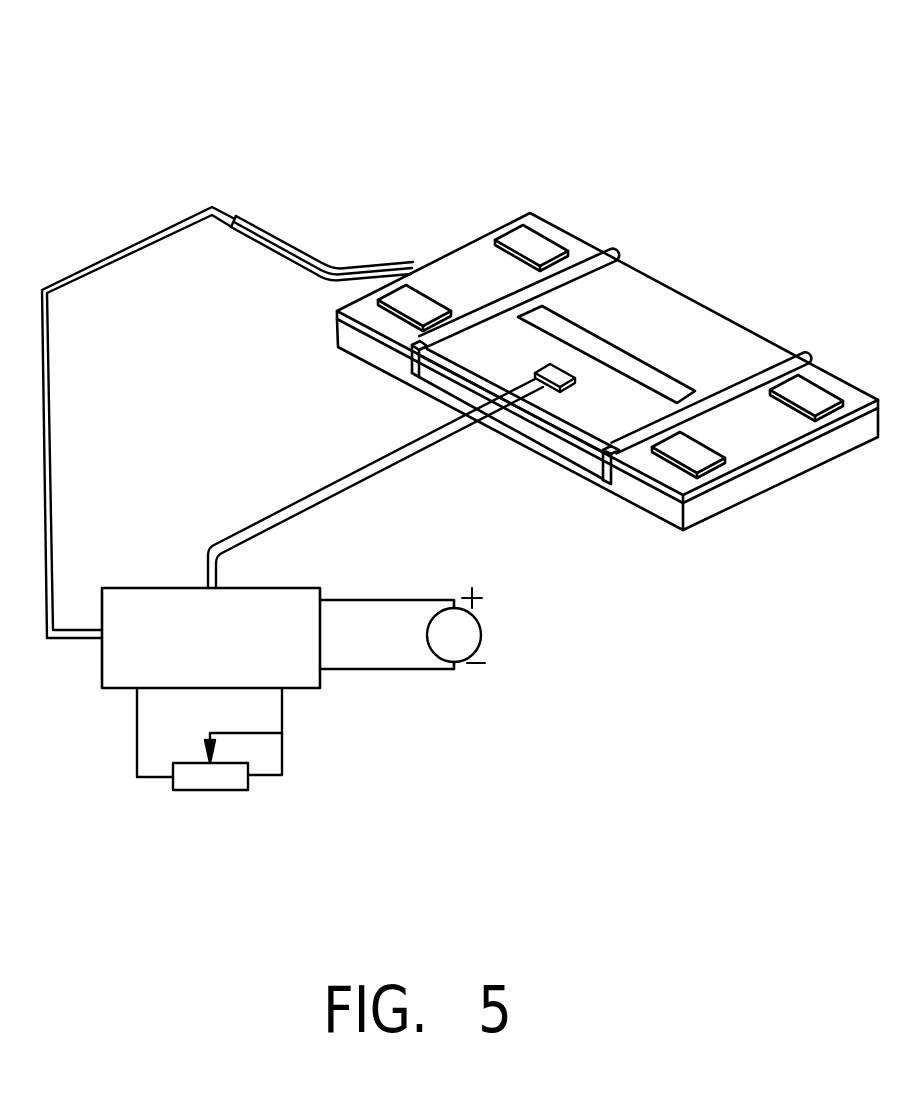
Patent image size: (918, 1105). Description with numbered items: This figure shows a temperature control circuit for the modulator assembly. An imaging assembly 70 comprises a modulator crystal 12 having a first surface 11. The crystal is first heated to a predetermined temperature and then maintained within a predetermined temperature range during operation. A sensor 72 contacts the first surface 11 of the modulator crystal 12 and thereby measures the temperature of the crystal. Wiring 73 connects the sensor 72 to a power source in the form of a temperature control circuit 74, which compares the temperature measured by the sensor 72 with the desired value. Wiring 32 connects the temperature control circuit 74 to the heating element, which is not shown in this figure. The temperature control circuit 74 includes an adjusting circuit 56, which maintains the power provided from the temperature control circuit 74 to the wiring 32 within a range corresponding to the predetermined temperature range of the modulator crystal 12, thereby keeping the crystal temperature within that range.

The first surface 11 is at (653, 308).
The modulator crystal 12 is at (732, 342).
The wiring 32 is at (103, 258).
The adjusting circuit 56 is at (213, 780).
The imaging assembly 70 is at (642, 152).
The sensor 72 is at (555, 390).
The wiring 73 is at (357, 470).
The temperature control circuit 74 is at (263, 613).